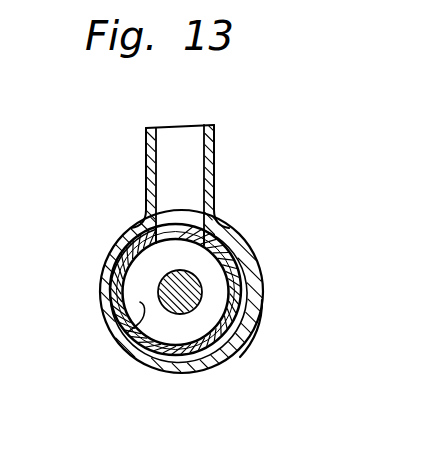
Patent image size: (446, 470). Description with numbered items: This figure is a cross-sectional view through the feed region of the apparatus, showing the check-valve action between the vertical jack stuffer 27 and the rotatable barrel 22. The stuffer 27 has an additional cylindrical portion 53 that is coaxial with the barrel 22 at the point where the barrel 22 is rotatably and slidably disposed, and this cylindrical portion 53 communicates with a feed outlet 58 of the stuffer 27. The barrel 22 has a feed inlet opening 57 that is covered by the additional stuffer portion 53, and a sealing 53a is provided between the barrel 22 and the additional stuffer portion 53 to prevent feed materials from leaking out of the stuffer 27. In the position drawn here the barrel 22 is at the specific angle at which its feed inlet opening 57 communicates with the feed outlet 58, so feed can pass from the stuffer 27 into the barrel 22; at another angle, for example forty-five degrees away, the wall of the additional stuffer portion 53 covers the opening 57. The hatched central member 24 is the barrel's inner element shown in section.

The vertical jack stuffer 27 is at (215, 150).
The feed outlet 58 is at (181, 221).
The additional cylindrical portion 53 is at (250, 256).
The feed inlet opening 57 is at (178, 236).
The barrel 22 is at (140, 302).
The core rod 24 is at (195, 314).
The sealing 53a is at (256, 330).